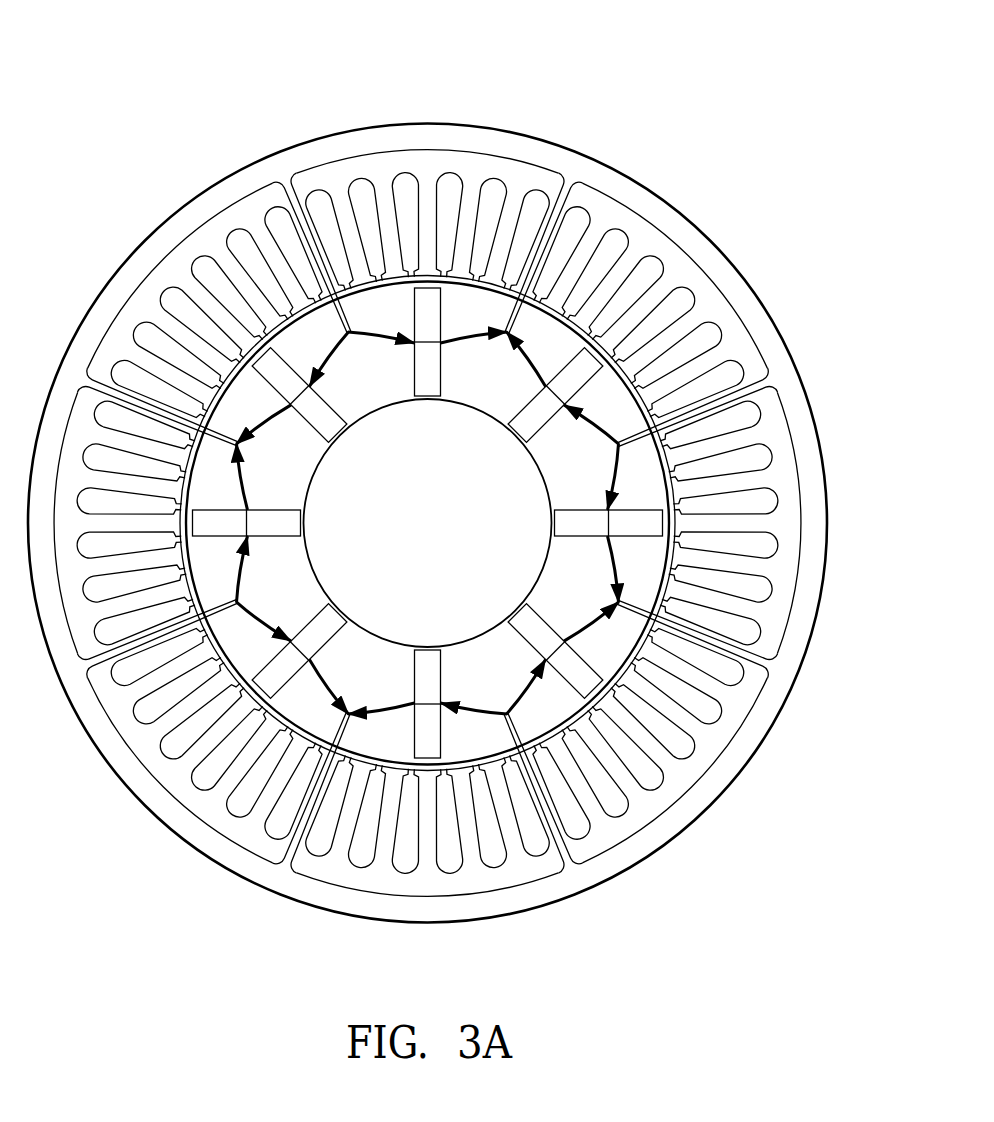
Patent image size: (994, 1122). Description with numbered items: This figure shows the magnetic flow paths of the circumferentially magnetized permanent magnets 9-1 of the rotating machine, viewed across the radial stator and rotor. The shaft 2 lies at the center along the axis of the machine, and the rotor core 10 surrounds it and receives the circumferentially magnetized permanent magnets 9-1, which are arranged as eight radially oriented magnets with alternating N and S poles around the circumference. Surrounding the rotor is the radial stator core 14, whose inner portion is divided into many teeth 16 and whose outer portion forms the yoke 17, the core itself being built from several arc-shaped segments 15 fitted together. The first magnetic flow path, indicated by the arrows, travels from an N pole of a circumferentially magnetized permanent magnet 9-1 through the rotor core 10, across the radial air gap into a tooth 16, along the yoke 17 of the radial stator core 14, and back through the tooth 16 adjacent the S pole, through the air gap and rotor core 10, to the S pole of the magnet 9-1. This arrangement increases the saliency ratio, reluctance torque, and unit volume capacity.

The shaft 2 is at (338, 487).
The circumferentially magnetized permanent magnet 9-1 is at (597, 342).
The rotor core 10 is at (615, 654).
The radial stator core 14 is at (677, 228).
The split stator core piece 15 is at (374, 150).
The tooth 16 is at (570, 250).
The yoke 17 is at (678, 267).